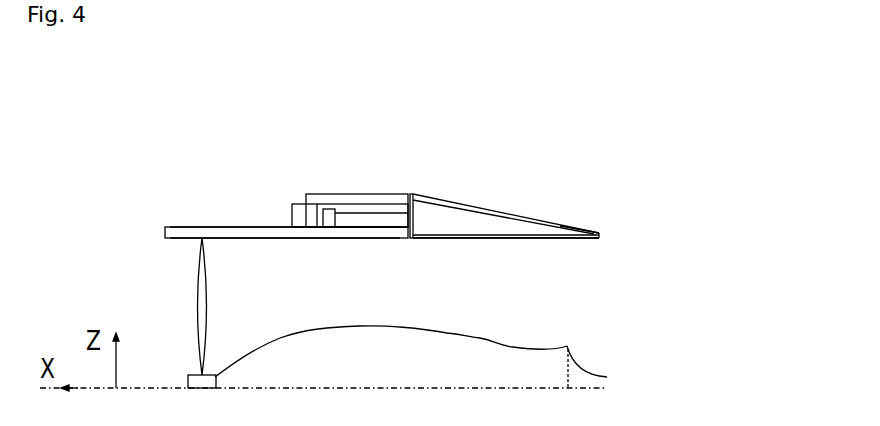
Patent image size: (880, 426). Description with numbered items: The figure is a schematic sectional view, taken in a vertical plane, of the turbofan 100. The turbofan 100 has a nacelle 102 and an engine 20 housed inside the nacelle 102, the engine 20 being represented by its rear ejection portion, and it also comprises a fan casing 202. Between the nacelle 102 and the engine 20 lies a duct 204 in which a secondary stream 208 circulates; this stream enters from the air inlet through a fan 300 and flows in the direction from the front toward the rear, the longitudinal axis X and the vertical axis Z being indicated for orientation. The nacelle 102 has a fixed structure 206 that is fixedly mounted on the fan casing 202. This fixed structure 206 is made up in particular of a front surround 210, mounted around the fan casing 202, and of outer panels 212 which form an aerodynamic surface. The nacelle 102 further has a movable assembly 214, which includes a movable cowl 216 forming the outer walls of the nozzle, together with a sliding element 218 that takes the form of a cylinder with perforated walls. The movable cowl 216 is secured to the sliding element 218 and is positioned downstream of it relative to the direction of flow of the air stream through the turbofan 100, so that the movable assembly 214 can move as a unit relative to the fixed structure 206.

The engine 20 is at (339, 358).
The turbofan 100 is at (580, 138).
The nacelle 102 is at (433, 177).
The fan casing 202 is at (173, 227).
The duct 204 is at (264, 276).
The fixed structure 206 is at (225, 212).
The secondary stream 208 is at (292, 292).
The front surround 210 is at (303, 212).
The outer panels 212 is at (352, 203).
The movable assembly 214 is at (575, 214).
The movable cowl 216 is at (508, 222).
The sliding element 218 is at (325, 215).
The fan 300 is at (200, 305).